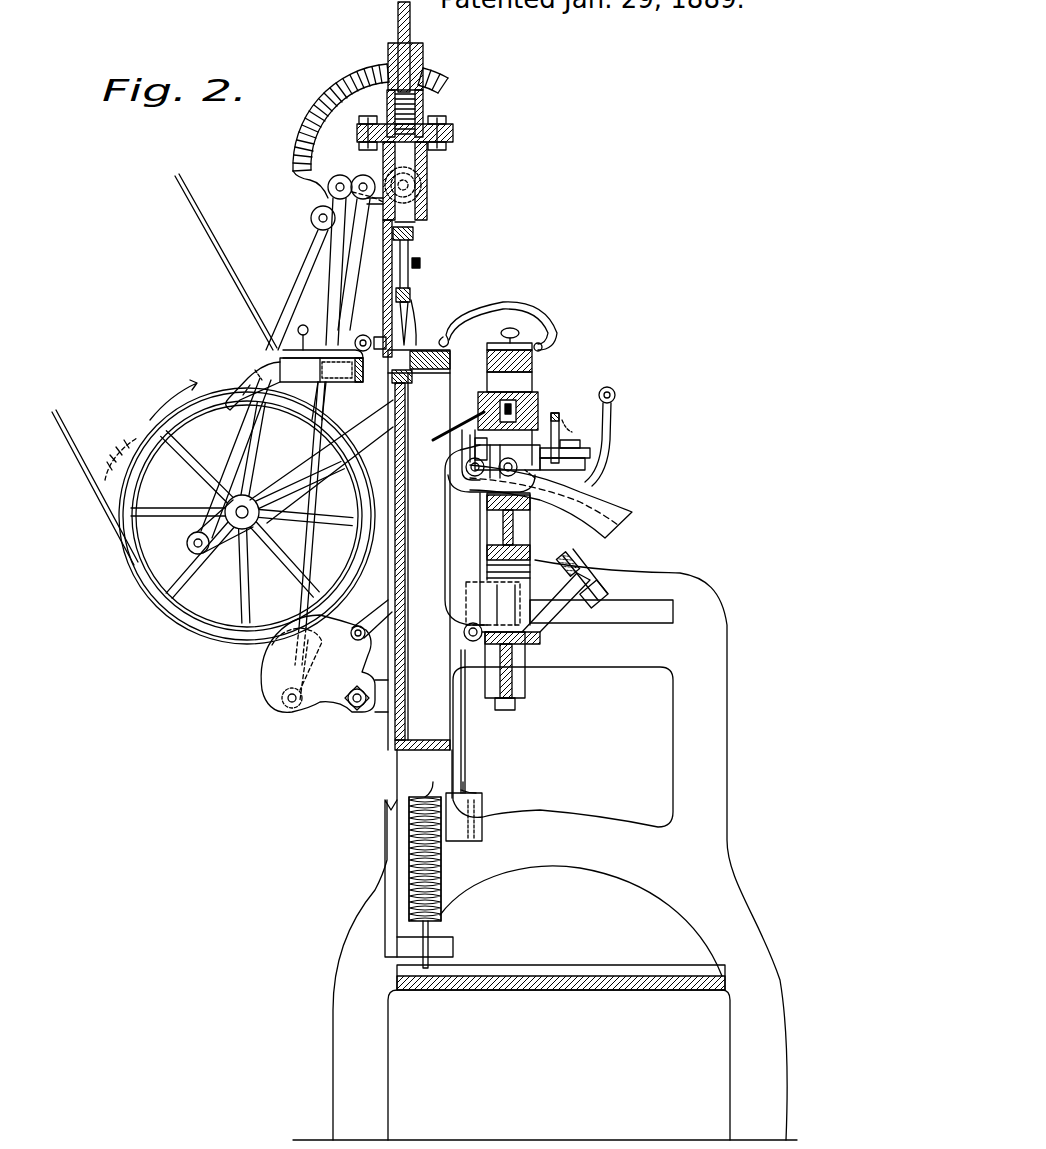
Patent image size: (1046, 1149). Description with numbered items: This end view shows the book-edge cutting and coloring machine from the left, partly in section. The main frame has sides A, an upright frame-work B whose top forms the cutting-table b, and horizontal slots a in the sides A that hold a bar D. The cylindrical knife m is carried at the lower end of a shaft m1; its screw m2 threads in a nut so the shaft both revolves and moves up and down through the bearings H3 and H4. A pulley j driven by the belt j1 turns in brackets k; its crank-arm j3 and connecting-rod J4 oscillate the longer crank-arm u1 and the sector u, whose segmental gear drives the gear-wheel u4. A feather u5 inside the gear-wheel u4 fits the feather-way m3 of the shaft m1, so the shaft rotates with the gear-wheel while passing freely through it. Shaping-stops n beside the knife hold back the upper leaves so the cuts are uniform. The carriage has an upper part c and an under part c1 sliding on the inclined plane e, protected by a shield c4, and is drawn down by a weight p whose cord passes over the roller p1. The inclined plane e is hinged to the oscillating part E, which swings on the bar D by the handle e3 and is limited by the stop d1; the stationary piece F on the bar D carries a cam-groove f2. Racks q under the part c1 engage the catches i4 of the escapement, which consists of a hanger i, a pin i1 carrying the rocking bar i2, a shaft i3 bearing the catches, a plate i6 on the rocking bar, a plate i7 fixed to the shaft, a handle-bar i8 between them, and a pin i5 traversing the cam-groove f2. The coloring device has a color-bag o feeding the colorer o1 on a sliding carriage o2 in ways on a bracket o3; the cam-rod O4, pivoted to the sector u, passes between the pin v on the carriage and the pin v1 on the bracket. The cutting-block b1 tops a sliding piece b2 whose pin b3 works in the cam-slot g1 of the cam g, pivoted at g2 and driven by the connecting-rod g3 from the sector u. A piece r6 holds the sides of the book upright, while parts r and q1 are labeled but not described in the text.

The sides A is at (545, 850).
The horizontal slots a is at (601, 609).
The upright frame-work B is at (419, 653).
The cutting-table b is at (422, 352).
The cutting-block b1 is at (412, 378).
The sliding piece b2 is at (398, 428).
The pin b3 is at (350, 636).
The feather-way m3 is at (398, 32).
The bearing H3 is at (423, 45).
The screw m2 is at (423, 106).
The gear-wheel u4 is at (430, 76).
The feather u5 is at (388, 68).
The sector u is at (370, 131).
The bearing H4 is at (427, 172).
The crank-arm u1 is at (383, 222).
The shaft m1 is at (414, 243).
The knife m is at (412, 293).
The shaping-stops n is at (412, 322).
The cam-rod O4 is at (350, 290).
The connecting-rod J4 is at (300, 278).
The colorer o1 is at (365, 335).
The carriage o2 is at (323, 336).
The bracket o3 is at (321, 370).
The roller or pin v is at (337, 370).
The roller or pin v1 is at (326, 384).
The color-bag o is at (252, 377).
The belt j1 is at (164, 369).
The pulley j is at (247, 516).
The brackets k is at (254, 511).
The crank-arm j3 is at (229, 466).
The connecting-rod g3 is at (307, 536).
The cam g is at (318, 663).
The cam-slot g1 is at (284, 665).
The pivot g2 is at (353, 707).
The piece r6 is at (498, 319).
The knob r is at (516, 331).
The upper part of carriage c is at (487, 358).
The under part of carriage c1 is at (508, 400).
The racks q is at (538, 395).
The spring end q1 is at (480, 395).
The inclined plane e is at (458, 417).
The shield c4 is at (445, 428).
The catches i4 is at (470, 440).
The hanger i is at (501, 455).
The shaft i3 is at (538, 440).
The plate i6 is at (569, 410).
The plate i7 is at (567, 441).
The handle-bar i8 is at (562, 472).
The rocking bar i2 is at (527, 474).
The pin i5 is at (465, 455).
The pin i1 is at (490, 478).
The handle e3 is at (611, 436).
The cam-groove f2 is at (618, 527).
The stationary piece F is at (482, 535).
The oscillating part E is at (512, 533).
The roller p1 is at (464, 705).
The bar D is at (512, 682).
The stop d1 is at (598, 577).
The weight p is at (485, 812).